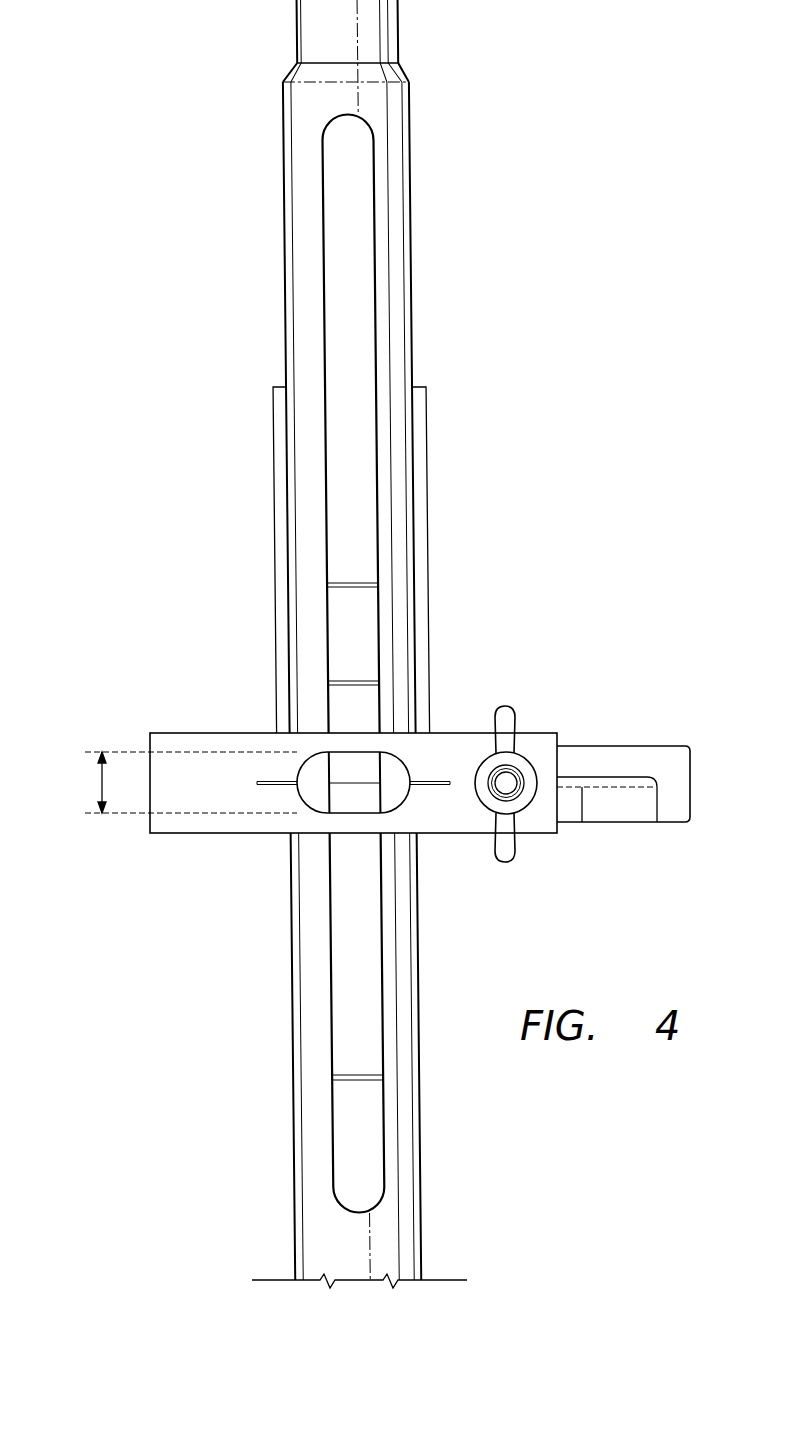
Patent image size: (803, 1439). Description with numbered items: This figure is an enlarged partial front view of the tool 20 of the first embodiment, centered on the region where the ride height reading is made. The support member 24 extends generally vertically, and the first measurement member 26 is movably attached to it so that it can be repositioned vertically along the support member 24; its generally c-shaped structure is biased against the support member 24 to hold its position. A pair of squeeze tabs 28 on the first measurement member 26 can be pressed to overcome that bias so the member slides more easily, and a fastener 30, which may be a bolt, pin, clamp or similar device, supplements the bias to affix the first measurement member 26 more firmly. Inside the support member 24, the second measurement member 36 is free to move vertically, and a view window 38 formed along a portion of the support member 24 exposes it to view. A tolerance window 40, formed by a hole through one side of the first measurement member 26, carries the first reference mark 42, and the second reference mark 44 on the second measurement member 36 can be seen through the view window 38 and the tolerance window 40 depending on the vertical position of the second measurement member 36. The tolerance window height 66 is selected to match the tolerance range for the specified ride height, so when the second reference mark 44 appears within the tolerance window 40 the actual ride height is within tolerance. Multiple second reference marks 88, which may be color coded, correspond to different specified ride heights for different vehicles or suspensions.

The tool 20 is at (176, 920).
The support member 24 is at (283, 220).
The first measurement member 26 is at (202, 733).
The squeeze tabs 28 is at (620, 746).
The fastener 30 is at (506, 707).
The second measurement member 36 is at (297, 40).
The view window 38 is at (373, 217).
The tolerance window 40 is at (402, 778).
The first reference mark 42 is at (257, 782).
The second reference mark 44 is at (347, 780).
The tolerance window height 66 is at (102, 787).
The multiple second reference marks 88 is at (350, 583).